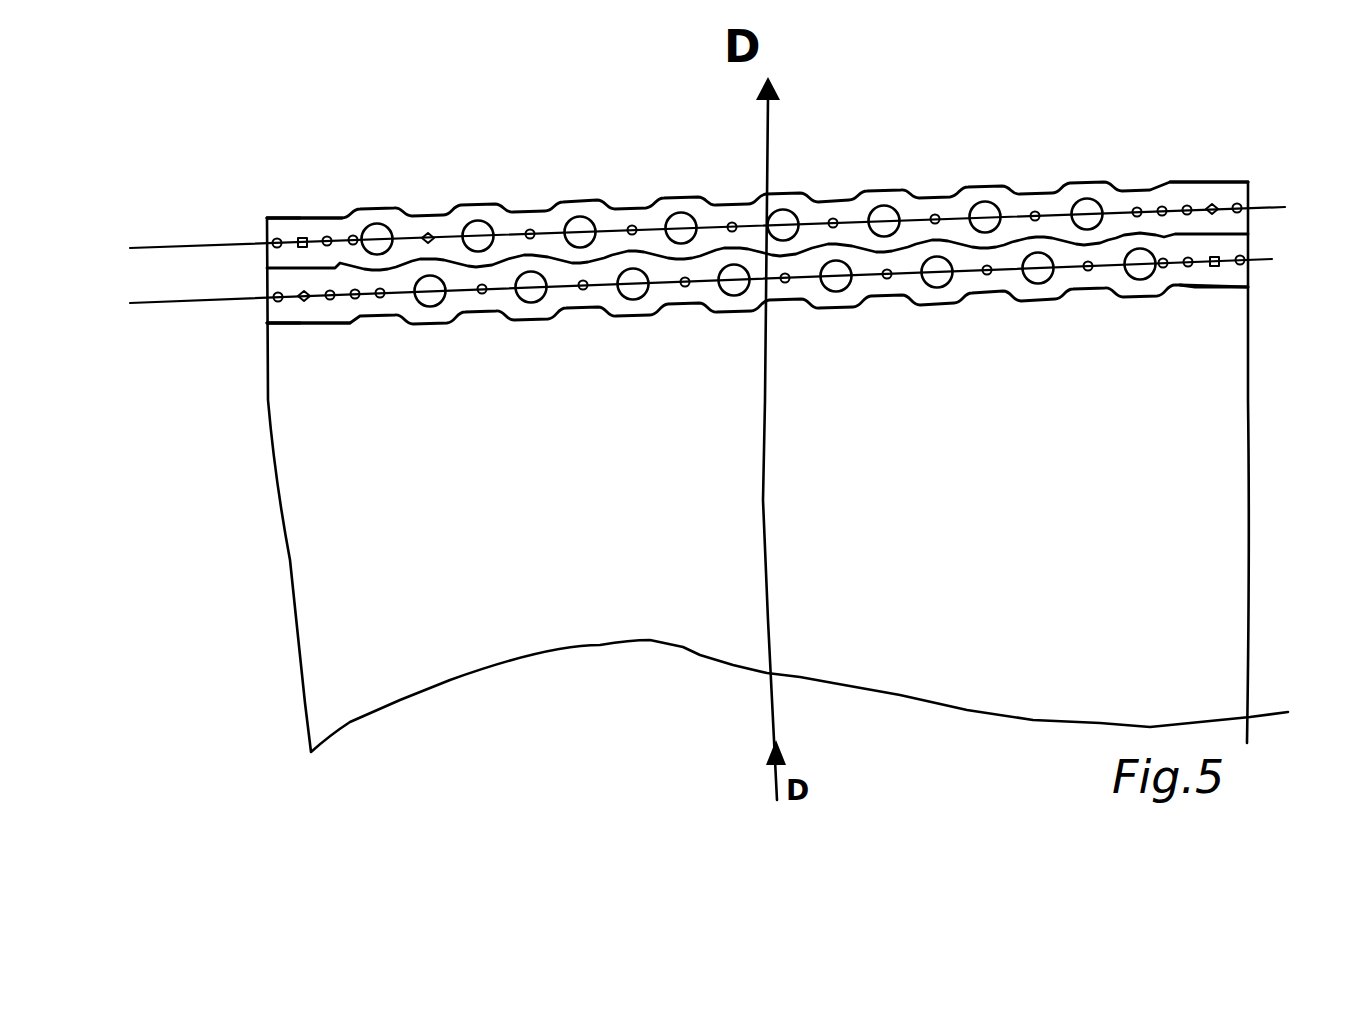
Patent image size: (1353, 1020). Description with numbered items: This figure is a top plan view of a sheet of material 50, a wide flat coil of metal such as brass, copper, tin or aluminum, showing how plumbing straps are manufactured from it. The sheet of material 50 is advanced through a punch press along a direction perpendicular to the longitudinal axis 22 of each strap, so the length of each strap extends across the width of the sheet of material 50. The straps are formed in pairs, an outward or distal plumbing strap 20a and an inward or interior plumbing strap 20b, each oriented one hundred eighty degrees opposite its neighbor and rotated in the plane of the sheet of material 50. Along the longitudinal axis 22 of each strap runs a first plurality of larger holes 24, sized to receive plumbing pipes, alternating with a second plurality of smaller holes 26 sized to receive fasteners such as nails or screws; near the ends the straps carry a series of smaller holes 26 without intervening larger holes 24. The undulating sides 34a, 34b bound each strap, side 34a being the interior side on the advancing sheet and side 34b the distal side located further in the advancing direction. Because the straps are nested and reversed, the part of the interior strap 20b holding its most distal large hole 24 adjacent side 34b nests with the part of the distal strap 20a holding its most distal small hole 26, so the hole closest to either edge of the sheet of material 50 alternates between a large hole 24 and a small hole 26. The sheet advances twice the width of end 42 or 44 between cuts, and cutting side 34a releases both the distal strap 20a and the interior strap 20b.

The distal plumbing strap 20a is at (255, 237).
The interior plumbing strap 20b is at (255, 310).
The longitudinal axis 22 is at (153, 262).
The first plurality of holes 24 is at (378, 232).
The second plurality of smaller holes 26 is at (381, 297).
The interior side 34a is at (267, 263).
The distal side 34b is at (334, 216).
The end 42 is at (273, 323).
The end 44 is at (283, 213).
The sheet of material 50 is at (737, 548).